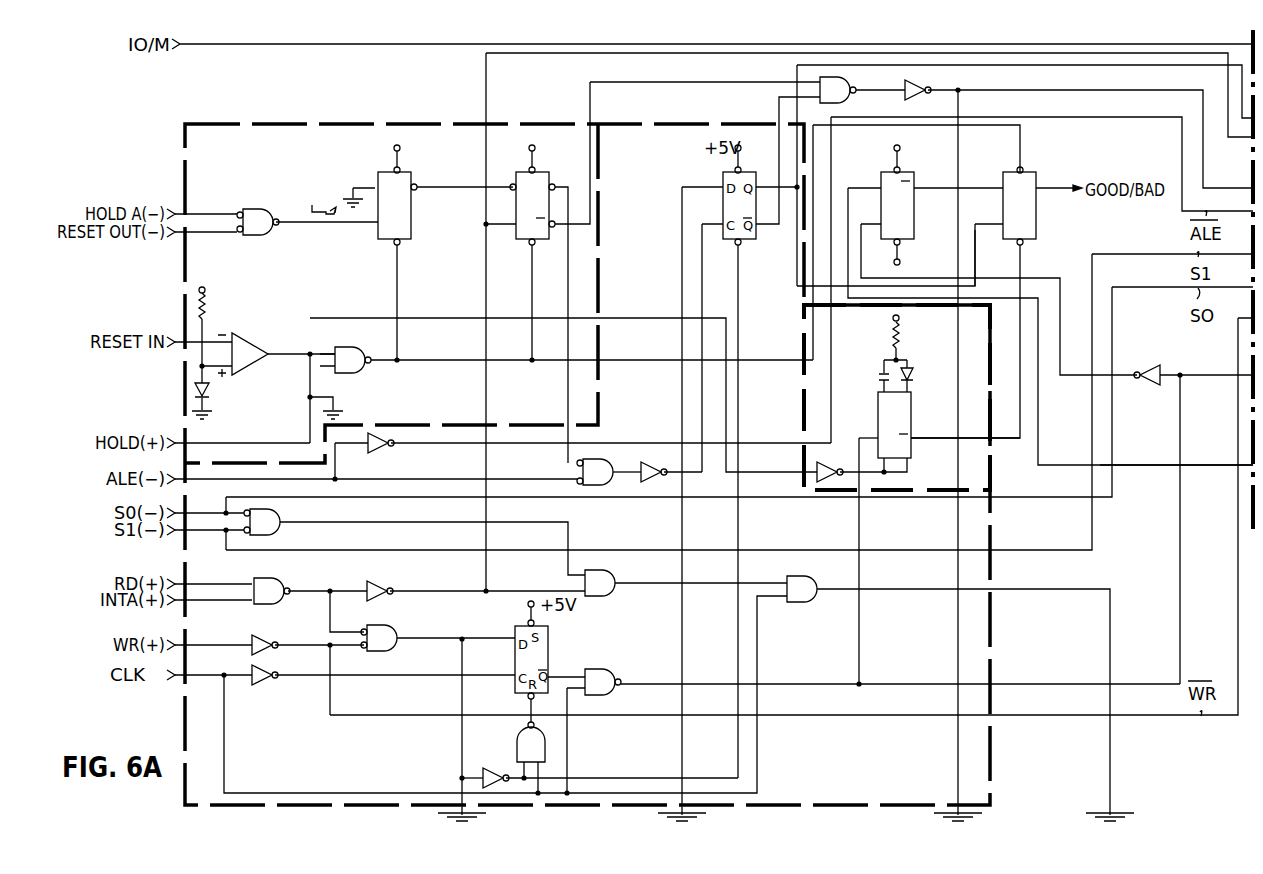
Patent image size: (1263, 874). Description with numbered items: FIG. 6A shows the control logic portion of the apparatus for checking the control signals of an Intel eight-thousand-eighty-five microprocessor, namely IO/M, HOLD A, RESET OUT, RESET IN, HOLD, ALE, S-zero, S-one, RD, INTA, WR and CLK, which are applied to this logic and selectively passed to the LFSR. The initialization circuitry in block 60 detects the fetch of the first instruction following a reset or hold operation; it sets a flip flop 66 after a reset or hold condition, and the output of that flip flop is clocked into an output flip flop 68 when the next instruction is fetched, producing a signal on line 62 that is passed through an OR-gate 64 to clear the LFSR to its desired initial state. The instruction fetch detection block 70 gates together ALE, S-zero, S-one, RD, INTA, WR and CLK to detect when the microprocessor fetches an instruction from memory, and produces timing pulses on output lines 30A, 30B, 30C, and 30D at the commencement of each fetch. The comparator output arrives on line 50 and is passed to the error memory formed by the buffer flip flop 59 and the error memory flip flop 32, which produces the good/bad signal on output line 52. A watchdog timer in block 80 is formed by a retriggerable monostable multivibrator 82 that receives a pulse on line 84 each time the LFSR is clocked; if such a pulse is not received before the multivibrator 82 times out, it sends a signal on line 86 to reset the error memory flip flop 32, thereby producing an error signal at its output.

The initialization circuitry block 60 is at (322, 124).
The output line 62 is at (588, 97).
The OR-gate 64 is at (860, 97).
The flip flop 66 is at (405, 172).
The output flip flop 68 is at (540, 172).
The buffer flip flop 59 is at (908, 172).
The error memory flip flop 32 is at (1030, 172).
The output line 52 is at (1057, 190).
The output line 30A is at (1110, 762).
The output line 30B is at (777, 110).
The output line 30C is at (984, 226).
The output line 30D is at (1205, 375).
The instruction fetch detection block 70 is at (990, 770).
The watchdog timer block 80 is at (990, 473).
The retriggerable monostable multivibrator 82 is at (905, 405).
The line 84 is at (858, 532).
The line 86 is at (936, 444).
The line 50 is at (1199, 463).